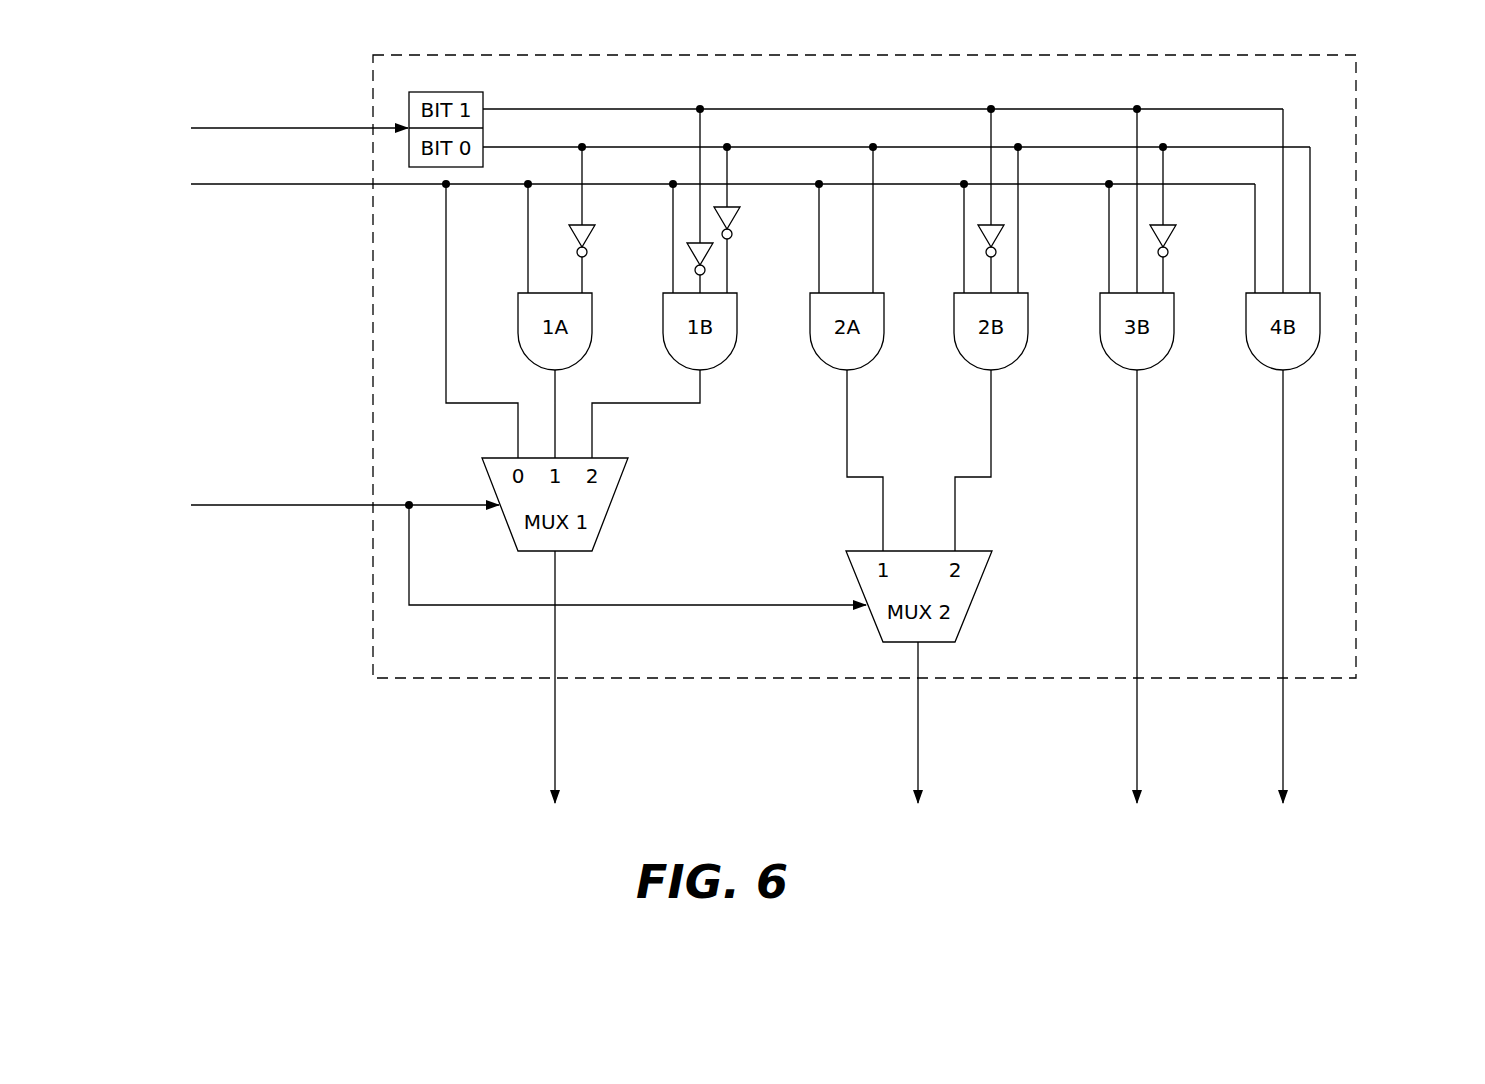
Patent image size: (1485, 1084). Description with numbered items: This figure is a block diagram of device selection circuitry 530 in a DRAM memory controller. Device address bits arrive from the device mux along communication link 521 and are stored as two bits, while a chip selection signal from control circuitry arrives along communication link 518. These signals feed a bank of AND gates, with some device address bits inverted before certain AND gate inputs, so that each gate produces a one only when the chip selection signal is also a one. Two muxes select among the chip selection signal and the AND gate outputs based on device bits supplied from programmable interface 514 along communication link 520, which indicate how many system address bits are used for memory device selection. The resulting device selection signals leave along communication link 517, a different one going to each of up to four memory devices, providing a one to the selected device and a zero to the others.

The programmable interface 514 is at (268, 567).
The communication link 517 is at (555, 715).
The communication link 518 is at (333, 185).
The communication link 520 is at (327, 505).
The communication link 521 is at (233, 129).
The device selection circuitry 530 is at (1357, 218).